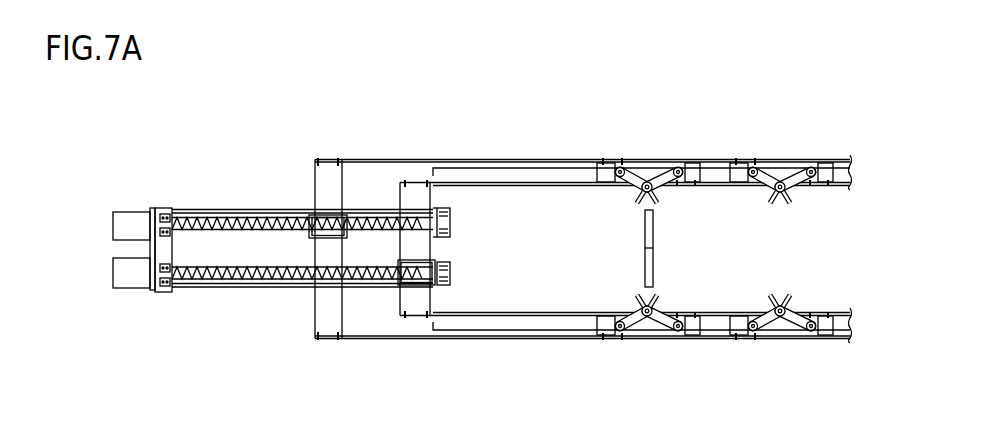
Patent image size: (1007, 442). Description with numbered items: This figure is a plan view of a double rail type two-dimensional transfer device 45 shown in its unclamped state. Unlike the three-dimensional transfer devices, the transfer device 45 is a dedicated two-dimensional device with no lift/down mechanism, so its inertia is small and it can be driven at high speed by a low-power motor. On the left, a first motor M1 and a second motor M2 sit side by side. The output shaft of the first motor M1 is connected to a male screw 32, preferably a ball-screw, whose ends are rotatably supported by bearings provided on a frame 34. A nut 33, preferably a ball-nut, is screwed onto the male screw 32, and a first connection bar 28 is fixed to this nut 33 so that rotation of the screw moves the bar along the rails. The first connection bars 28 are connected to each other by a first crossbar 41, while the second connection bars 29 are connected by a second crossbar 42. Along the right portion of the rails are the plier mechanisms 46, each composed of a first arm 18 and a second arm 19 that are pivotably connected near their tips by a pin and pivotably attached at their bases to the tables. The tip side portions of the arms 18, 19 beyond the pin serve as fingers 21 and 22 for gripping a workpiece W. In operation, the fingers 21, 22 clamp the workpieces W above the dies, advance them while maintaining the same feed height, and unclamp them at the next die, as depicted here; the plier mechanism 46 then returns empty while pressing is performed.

The first arm 18 is at (632, 140).
The second arm 19 is at (686, 147).
The finger 21 is at (609, 206).
The finger 22 is at (682, 211).
The first connection bar 28 is at (390, 160).
The second connection bar 29 is at (477, 182).
The male screw 32 is at (213, 218).
The nut 33 is at (320, 215).
The frame 34 is at (187, 210).
The first crossbar 41 is at (325, 310).
The second crossbar 42 is at (418, 248).
The transfer device 45 is at (712, 201).
The plier mechanism 46 is at (712, 202).
The first motor M1 is at (122, 229).
The second motor M2 is at (122, 271).
The workpiece W is at (646, 243).